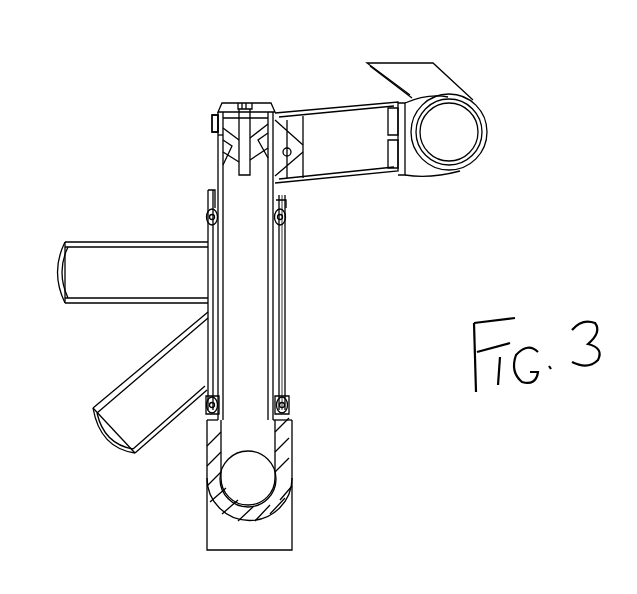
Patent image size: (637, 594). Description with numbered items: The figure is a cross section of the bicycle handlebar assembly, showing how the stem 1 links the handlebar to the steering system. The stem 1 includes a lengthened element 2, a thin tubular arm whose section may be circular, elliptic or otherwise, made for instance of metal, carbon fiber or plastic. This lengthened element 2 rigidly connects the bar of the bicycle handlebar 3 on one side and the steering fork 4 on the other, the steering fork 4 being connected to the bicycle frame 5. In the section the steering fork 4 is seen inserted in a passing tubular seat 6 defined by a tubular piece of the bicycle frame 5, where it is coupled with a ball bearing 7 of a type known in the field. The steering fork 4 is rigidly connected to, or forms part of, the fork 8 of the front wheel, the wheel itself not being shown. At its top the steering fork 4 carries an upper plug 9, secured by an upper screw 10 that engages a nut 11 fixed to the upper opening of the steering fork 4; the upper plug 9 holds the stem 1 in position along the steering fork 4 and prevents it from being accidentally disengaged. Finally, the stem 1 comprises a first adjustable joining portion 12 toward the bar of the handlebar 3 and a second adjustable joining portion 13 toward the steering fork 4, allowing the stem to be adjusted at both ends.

The stem 1 is at (422, 195).
The lengthened element 2 is at (352, 102).
The bicycle handlebar 3 is at (488, 128).
The steering fork 4 is at (222, 145).
The bicycle frame 5 is at (297, 317).
The passing tubular seat 6 is at (268, 343).
The ball bearing 7 is at (288, 213).
The fork 8 is at (218, 534).
The upper plug 9 is at (222, 102).
The upper screw 10 is at (243, 102).
The nut 11 is at (254, 138).
The first adjustable joining portion 12 is at (478, 92).
The second adjustable joining portion 13 is at (201, 130).